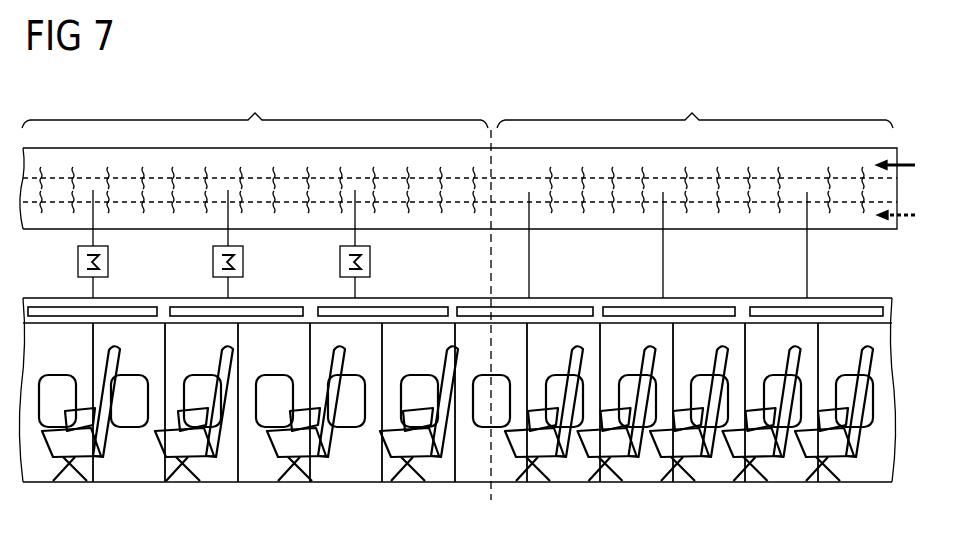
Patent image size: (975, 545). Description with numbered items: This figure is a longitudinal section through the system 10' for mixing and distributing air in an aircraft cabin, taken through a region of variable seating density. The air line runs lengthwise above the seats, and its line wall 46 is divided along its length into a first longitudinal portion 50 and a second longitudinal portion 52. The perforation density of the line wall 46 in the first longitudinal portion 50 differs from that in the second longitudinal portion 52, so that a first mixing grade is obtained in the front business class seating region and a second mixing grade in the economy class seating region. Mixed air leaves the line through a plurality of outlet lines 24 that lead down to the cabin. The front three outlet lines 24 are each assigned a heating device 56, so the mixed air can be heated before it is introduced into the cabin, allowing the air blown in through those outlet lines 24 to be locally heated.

The system for mixing and distributing air 10' is at (459, 132).
The outlet line 24 is at (90, 239).
The line wall 46 is at (457, 193).
The first longitudinal portion 50 is at (255, 107).
The second longitudinal portion 52 is at (695, 107).
The heating device 56 is at (109, 262).